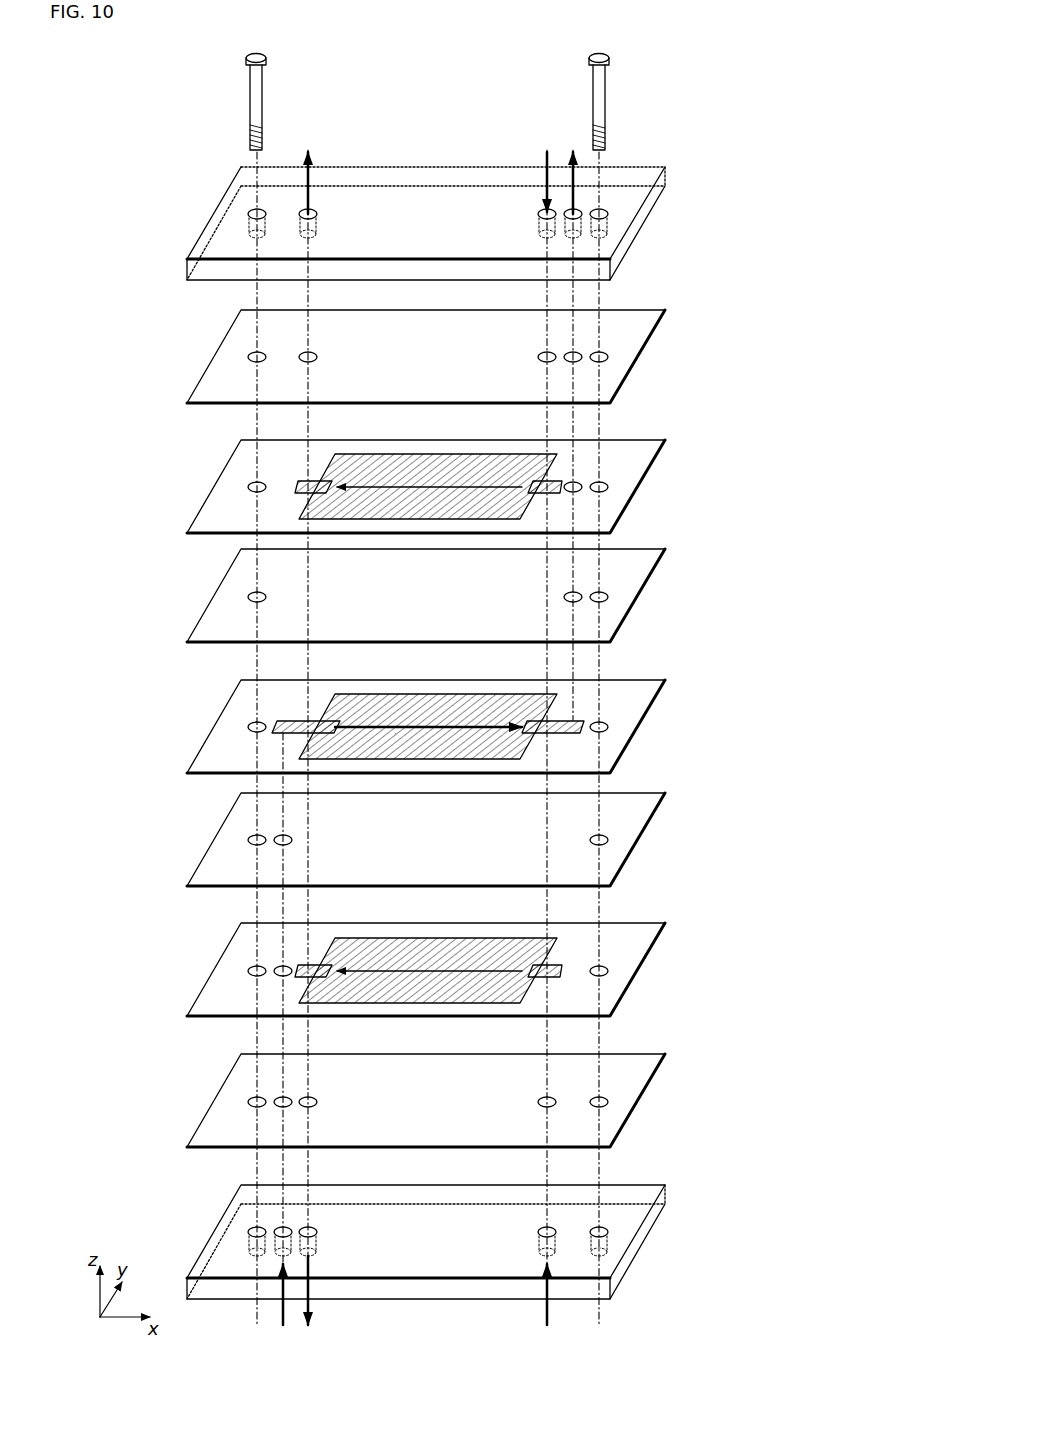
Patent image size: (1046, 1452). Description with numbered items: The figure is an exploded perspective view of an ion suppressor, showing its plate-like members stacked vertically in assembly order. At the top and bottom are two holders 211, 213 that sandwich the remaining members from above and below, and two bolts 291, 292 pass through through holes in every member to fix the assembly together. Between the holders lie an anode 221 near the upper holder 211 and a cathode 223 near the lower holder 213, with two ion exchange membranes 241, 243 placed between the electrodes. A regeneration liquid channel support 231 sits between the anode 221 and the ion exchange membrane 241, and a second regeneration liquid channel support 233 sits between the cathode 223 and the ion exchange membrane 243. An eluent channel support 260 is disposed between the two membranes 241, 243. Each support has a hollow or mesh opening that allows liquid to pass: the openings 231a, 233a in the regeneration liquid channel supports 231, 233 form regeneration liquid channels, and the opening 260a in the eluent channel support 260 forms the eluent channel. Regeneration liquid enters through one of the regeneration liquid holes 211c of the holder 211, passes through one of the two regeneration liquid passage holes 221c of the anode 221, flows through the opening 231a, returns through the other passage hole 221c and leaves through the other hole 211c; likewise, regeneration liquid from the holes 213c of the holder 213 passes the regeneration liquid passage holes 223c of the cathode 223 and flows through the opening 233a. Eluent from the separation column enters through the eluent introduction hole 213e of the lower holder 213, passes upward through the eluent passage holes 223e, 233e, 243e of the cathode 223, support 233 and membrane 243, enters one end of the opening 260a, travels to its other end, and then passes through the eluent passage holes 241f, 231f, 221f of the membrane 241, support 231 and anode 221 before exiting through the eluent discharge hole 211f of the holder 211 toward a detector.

The bolt 291 is at (260, 89).
The bolt 292 is at (606, 89).
The holder 211 is at (464, 201).
The regeneration liquid introduction and discharge holes of holder 211c is at (538, 213).
The eluent discharge hole 211f is at (578, 209).
The anode 221 is at (464, 340).
The regeneration liquid passage holes 221c is at (538, 358).
The eluent passage hole 221f is at (578, 352).
The regeneration liquid channel support 231 is at (464, 470).
The opening 231a is at (402, 470).
The eluent passage hole 231f is at (578, 482).
The ion exchange membrane 241 is at (464, 595).
The eluent passage hole 241f is at (565, 596).
The eluent channel support 260 is at (464, 713).
The opening 260a is at (402, 708).
The ion exchange membrane 243 is at (464, 839).
The eluent passage hole 243e is at (380, 834).
The regeneration liquid channel support 233 is at (464, 957).
The opening 233a is at (402, 951).
The eluent passage hole 233e is at (291, 965).
The cathode 223 is at (464, 1089).
The regeneration liquid passage holes 223c is at (538, 1103).
The eluent passage hole 223e is at (291, 1097).
The holder 213 is at (464, 1244).
The regeneration liquid introduction and discharge holes of holder 213c is at (538, 1232).
The eluent introduction hole 213e is at (292, 1227).